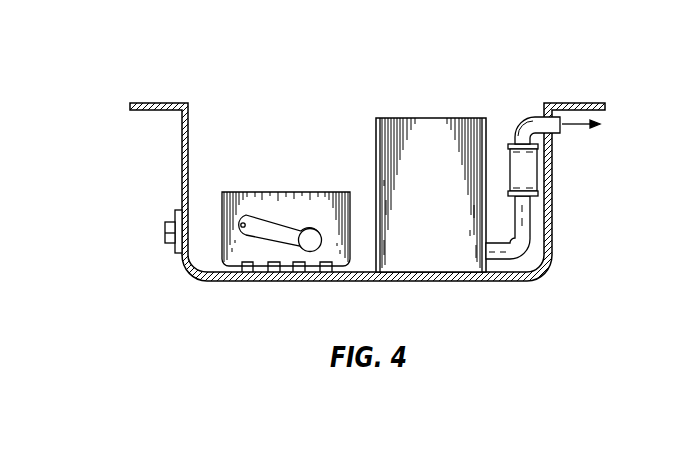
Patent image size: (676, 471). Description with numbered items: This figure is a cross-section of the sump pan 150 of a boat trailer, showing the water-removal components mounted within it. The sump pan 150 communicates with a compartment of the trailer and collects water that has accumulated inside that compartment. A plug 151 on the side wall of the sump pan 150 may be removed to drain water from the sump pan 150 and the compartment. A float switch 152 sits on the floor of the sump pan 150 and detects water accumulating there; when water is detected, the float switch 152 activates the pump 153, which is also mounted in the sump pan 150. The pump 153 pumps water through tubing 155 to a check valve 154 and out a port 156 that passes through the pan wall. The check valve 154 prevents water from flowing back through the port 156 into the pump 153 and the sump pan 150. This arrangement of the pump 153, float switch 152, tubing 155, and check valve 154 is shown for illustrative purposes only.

The sump pan 150 is at (148, 103).
The plug 151 is at (165, 237).
The float switch 152 is at (254, 192).
The pump 153 is at (430, 118).
The check valve 154 is at (532, 175).
The tubing 155 is at (528, 237).
The port 156 is at (555, 136).